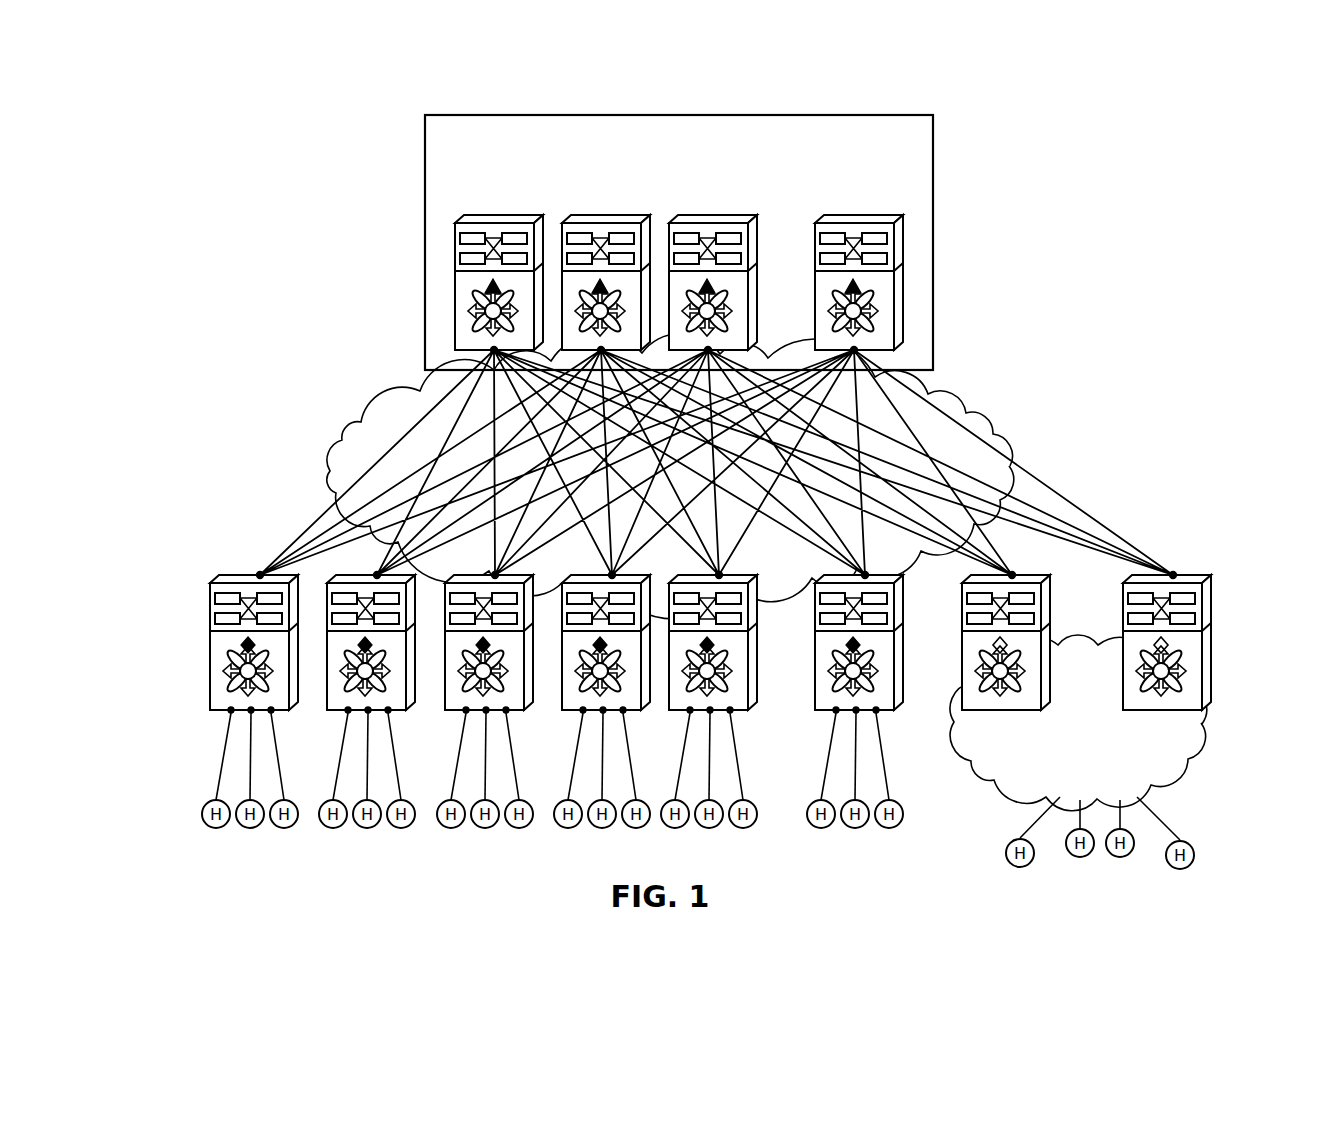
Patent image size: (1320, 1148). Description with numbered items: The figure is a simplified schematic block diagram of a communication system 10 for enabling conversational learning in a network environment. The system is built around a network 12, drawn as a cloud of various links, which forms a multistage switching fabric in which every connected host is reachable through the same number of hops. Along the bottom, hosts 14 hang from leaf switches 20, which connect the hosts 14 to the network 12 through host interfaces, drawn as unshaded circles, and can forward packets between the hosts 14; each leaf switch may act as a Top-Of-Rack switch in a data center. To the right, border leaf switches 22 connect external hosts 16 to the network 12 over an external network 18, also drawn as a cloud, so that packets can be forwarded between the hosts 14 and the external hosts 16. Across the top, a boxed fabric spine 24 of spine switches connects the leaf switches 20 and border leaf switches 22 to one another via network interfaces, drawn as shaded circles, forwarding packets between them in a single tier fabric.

The communication system 10 is at (1072, 255).
The network 12 is at (333, 462).
The hosts 14 is at (195, 815).
The external hosts 16 is at (1222, 856).
The external network 18 is at (1190, 740).
The leaf switches 20 is at (196, 651).
The border leaf switches 22 is at (1235, 605).
The fabric spine 24 is at (418, 240).